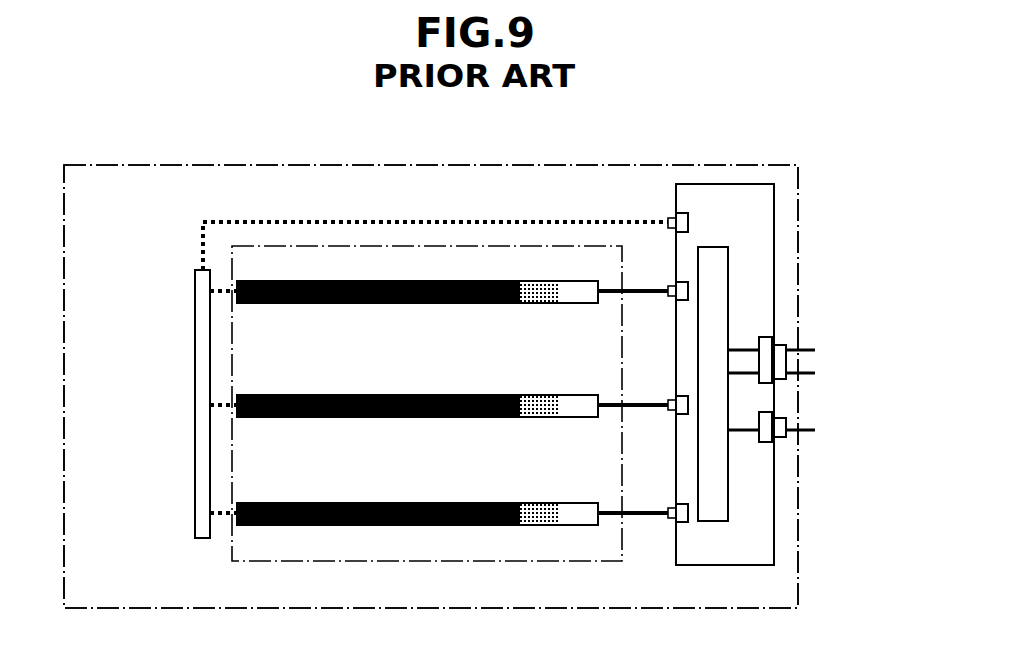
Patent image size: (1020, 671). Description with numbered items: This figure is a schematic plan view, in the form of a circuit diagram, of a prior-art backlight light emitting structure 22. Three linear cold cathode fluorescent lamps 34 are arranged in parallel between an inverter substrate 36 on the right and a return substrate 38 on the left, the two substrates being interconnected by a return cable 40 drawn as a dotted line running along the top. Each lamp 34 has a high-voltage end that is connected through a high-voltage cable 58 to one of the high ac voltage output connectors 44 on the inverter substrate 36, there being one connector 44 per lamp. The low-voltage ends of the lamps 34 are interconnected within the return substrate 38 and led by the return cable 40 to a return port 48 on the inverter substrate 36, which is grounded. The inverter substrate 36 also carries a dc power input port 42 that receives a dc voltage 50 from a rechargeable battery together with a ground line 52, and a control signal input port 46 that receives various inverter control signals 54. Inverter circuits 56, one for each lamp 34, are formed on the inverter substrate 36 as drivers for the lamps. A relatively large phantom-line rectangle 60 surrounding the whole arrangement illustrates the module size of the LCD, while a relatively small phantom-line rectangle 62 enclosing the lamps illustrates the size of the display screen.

The light emitting structure 22 is at (650, 143).
The cold cathode fluorescent lamp 34 is at (425, 303).
The inverter substrate 36 is at (775, 200).
The return substrate 38 is at (195, 350).
The return cable 40 is at (407, 222).
The dc power input port 42 is at (765, 337).
The high ac voltage output connector 44 is at (676, 283).
The control signal input port 46 is at (768, 445).
The return port 48 is at (676, 215).
The dc voltage 50 is at (807, 349).
The ground line 52 is at (807, 372).
The inverter control signals 54 is at (807, 428).
The inverter circuits 56 is at (712, 522).
The high-voltage cable 58 is at (648, 295).
The phantom-line rectangle (module size) 60 is at (227, 163).
The phantom-line rectangle (display screen size) 62 is at (440, 562).